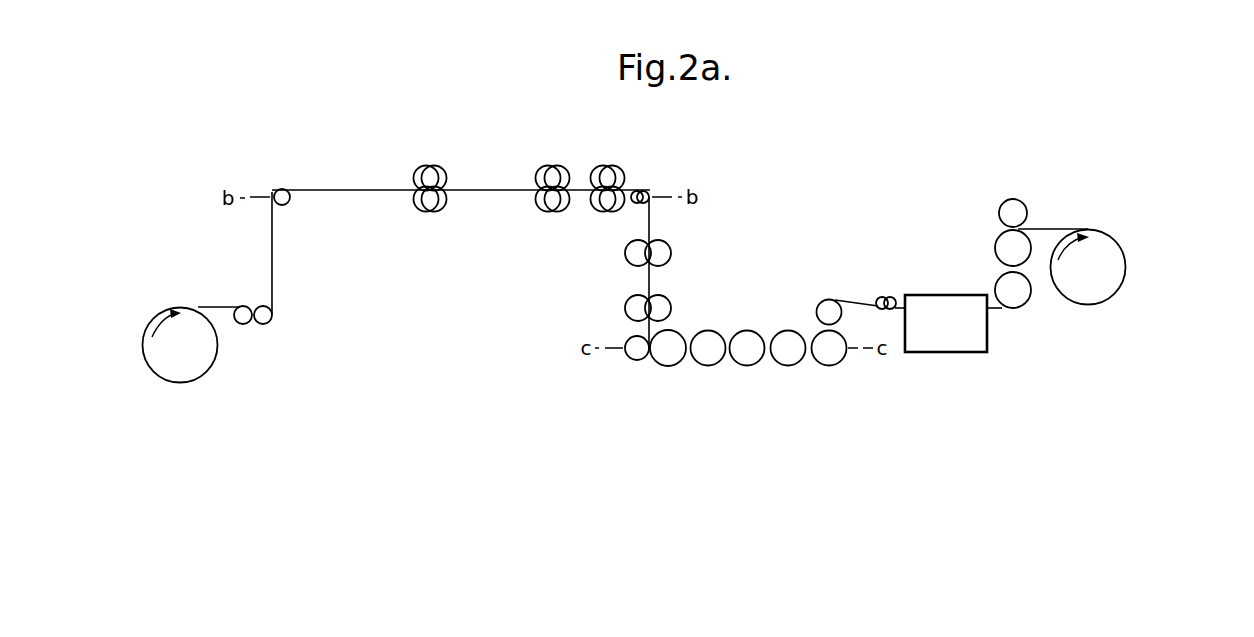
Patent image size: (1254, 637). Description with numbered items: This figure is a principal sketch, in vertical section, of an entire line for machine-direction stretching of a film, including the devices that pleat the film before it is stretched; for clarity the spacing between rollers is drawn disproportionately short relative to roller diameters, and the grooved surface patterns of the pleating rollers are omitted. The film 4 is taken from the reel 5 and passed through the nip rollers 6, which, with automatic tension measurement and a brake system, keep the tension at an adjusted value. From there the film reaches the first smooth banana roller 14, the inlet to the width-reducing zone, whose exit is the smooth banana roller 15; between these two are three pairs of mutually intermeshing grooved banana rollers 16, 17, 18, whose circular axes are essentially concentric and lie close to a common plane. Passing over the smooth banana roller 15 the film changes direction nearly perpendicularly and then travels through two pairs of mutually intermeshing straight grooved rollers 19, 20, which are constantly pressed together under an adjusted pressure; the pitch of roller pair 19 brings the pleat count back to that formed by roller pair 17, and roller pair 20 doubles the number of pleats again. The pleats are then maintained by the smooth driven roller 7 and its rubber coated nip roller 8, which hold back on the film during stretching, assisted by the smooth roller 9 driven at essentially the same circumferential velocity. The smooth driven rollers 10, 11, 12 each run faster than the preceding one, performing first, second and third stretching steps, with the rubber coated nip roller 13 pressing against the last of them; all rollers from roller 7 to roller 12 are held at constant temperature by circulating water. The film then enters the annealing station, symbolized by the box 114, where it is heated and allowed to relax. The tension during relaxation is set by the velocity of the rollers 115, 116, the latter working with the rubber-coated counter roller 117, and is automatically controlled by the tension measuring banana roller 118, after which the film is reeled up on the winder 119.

The film 4 is at (358, 188).
The reel 5 is at (178, 373).
The nip rollers 6 is at (245, 324).
The smooth driven roller 7 is at (675, 335).
The rubber coated nip roller 8 is at (635, 359).
The smooth roller 9 is at (713, 335).
The smooth roller 10 is at (745, 361).
The smooth roller 11 is at (788, 331).
The smooth roller 12 is at (833, 360).
The rubber coated nip roller 13 is at (827, 300).
The first smooth banana roller 14 is at (287, 205).
The smooth banana roller 15 is at (645, 184).
The grooved banana roller pair 16 is at (428, 218).
The grooved banana roller pair 17 is at (552, 217).
The grooved banana roller pair 18 is at (608, 217).
The straight grooved roller pair 19 is at (668, 247).
The straight grooved roller pair 20 is at (627, 308).
The annealing station 114 is at (946, 323).
The roller 115 is at (1020, 297).
The roller 116 is at (1002, 247).
The rubber-coated counter roller 117 is at (1013, 199).
The tension measuring banana roller 118 is at (883, 297).
The winder 119 is at (1118, 270).